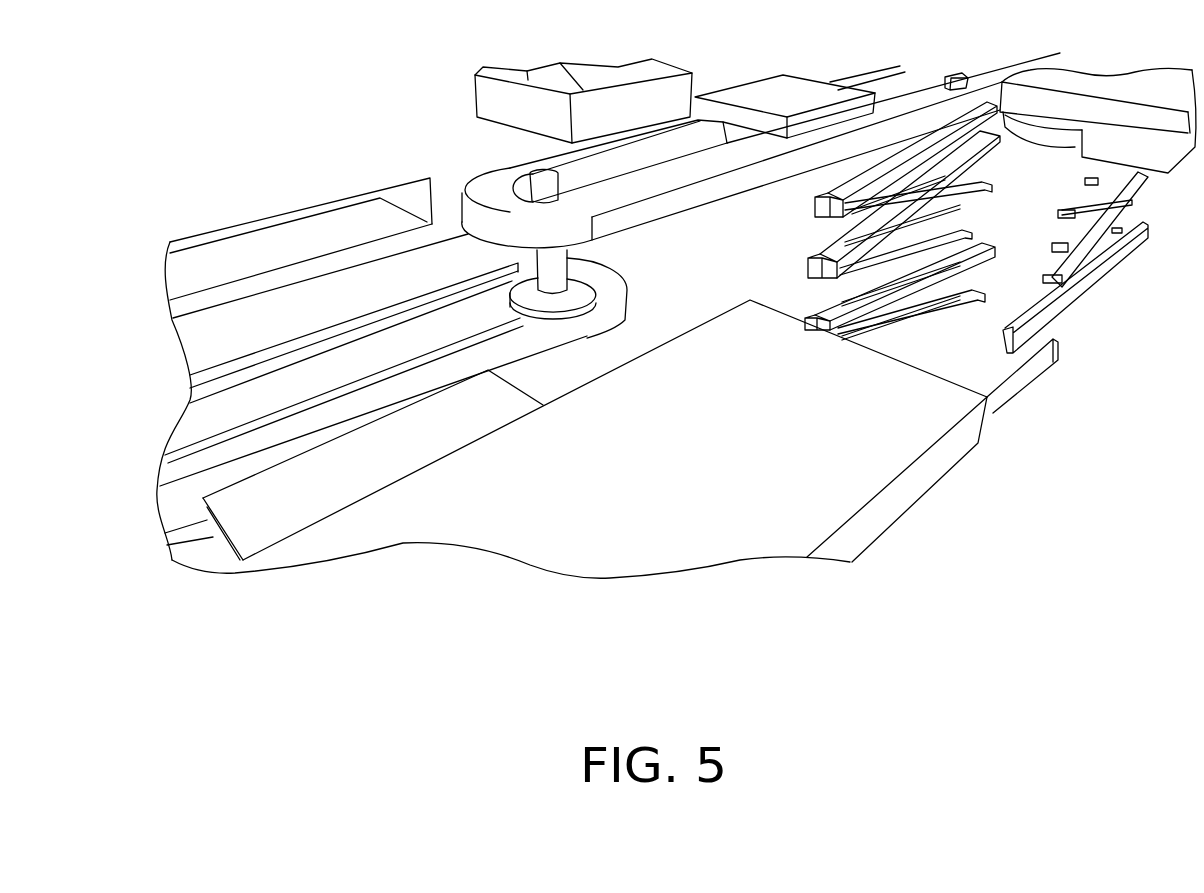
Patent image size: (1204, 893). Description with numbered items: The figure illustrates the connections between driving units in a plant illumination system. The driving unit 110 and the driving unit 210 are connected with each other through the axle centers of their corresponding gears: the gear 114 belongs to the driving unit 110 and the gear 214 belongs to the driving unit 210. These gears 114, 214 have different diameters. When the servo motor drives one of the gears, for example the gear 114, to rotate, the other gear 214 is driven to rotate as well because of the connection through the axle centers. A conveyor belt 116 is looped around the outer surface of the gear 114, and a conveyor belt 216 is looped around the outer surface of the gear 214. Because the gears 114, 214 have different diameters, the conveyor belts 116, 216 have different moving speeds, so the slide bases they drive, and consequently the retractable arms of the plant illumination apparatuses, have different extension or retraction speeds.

The driving unit 110 is at (583, 337).
The gear 114 is at (583, 285).
The conveyor belt 116 is at (540, 348).
The driving unit 210 is at (512, 197).
The gear 214 is at (517, 195).
The conveyor belt 216 is at (737, 178).